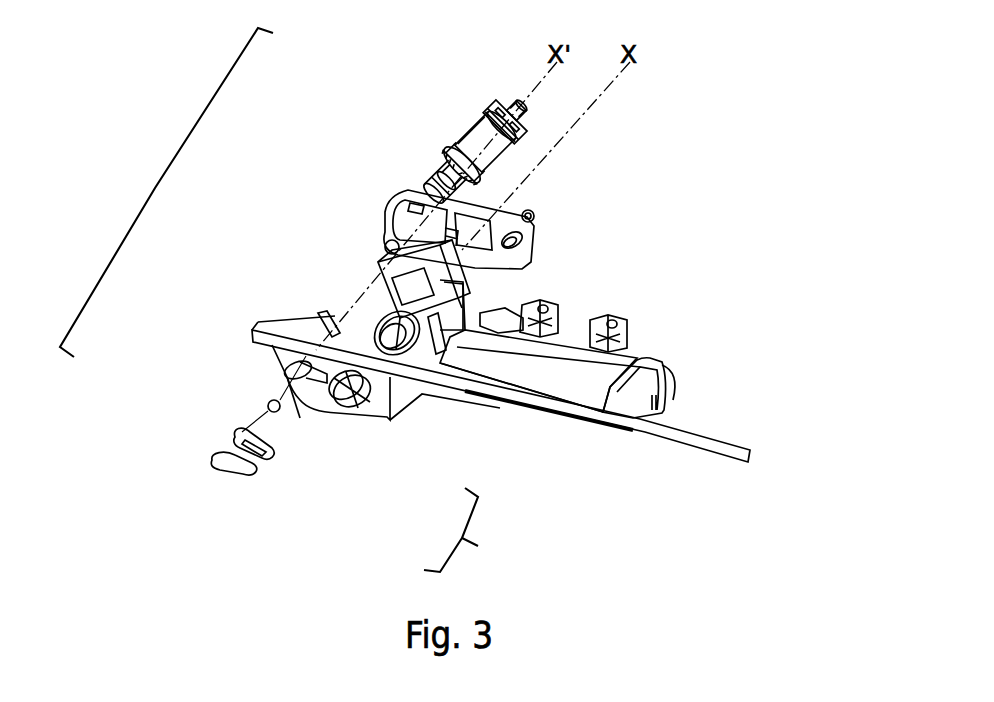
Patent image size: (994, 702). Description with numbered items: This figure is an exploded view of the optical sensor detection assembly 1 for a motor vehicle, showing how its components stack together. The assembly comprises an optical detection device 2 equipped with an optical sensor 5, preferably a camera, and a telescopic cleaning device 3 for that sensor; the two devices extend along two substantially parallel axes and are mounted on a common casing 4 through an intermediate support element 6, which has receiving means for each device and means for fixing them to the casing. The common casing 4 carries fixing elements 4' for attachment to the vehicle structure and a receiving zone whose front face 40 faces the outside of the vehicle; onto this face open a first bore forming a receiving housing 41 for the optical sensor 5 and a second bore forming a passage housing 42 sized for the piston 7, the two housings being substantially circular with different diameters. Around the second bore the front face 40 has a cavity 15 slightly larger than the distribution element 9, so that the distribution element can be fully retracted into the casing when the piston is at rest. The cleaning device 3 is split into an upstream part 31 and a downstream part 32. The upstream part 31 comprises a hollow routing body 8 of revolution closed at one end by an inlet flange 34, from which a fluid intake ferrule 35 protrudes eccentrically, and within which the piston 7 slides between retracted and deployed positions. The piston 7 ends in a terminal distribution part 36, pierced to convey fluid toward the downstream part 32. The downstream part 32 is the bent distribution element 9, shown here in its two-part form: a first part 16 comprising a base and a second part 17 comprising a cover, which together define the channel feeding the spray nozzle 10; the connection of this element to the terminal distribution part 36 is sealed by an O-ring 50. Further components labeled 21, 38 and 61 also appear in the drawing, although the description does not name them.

The optical sensor detection assembly 1 is at (697, 97).
The optical detection device 2 is at (467, 302).
The cleaning device 3 is at (155, 188).
The common casing 4 is at (626, 362).
The fixing elements 4' is at (581, 347).
The optical sensor 5 is at (378, 340).
The intermediate support element 6 is at (538, 250).
The piston 7 is at (427, 186).
The terminal distribution part 36 is at (446, 180).
The routing body 8 is at (507, 180).
The distribution element 9 is at (460, 530).
The spray nozzle 10 is at (283, 460).
The cavity 15 is at (290, 372).
The first part 16 is at (235, 429).
The second part 17 is at (205, 457).
The plate opening 21 is at (531, 270).
The upstream part 31 is at (398, 130).
The downstream part 32 is at (232, 412).
The inlet flange 34 is at (537, 142).
The fluid intake ferrule 35 is at (541, 110).
The knurled nut 38 is at (441, 146).
The front face 40 is at (372, 414).
The receiving housing 41 is at (365, 388).
The passage housing 42 is at (288, 366).
The O-ring 50 is at (299, 415).
The pin 61 is at (534, 248).